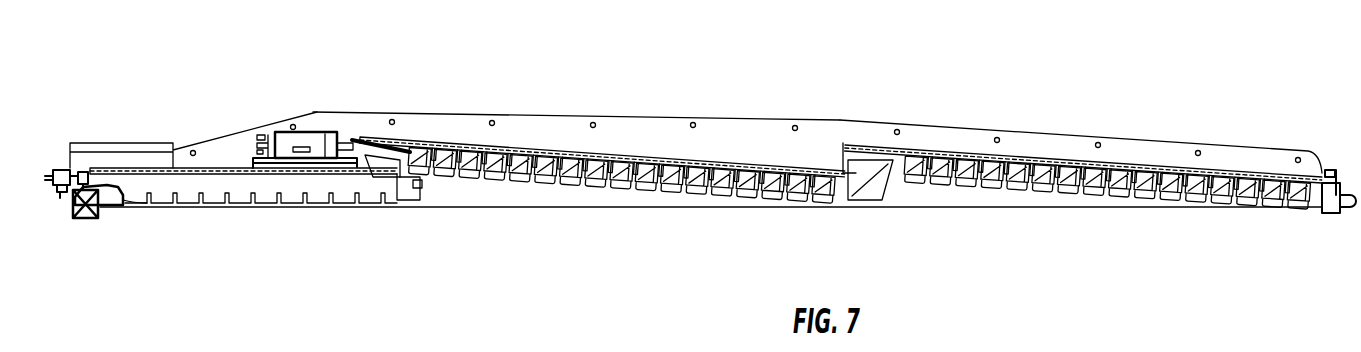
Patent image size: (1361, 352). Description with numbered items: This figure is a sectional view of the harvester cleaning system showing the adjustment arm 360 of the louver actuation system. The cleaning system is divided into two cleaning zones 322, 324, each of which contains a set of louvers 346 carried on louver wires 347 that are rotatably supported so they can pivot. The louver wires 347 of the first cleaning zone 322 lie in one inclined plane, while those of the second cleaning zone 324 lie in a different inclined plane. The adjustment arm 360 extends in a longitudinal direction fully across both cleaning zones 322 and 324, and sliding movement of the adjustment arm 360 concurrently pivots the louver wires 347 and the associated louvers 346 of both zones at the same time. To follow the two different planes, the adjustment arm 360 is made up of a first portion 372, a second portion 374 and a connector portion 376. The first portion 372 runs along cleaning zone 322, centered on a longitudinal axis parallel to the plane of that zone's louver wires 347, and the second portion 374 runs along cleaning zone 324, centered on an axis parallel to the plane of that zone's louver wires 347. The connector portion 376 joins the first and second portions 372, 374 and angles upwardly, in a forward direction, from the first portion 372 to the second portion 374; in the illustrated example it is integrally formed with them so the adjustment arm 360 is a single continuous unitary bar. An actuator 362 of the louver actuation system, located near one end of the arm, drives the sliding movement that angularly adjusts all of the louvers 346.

The cleaning zone 322 is at (840, 137).
The cleaning zone 324 is at (1300, 147).
The louvers 346 is at (725, 192).
The louver wires 347 is at (778, 193).
The adjustment arm 360 is at (1142, 188).
The actuator 362 is at (305, 130).
The first portion 372 is at (582, 181).
The second portion 374 is at (1017, 178).
The connector portion 376 is at (872, 197).